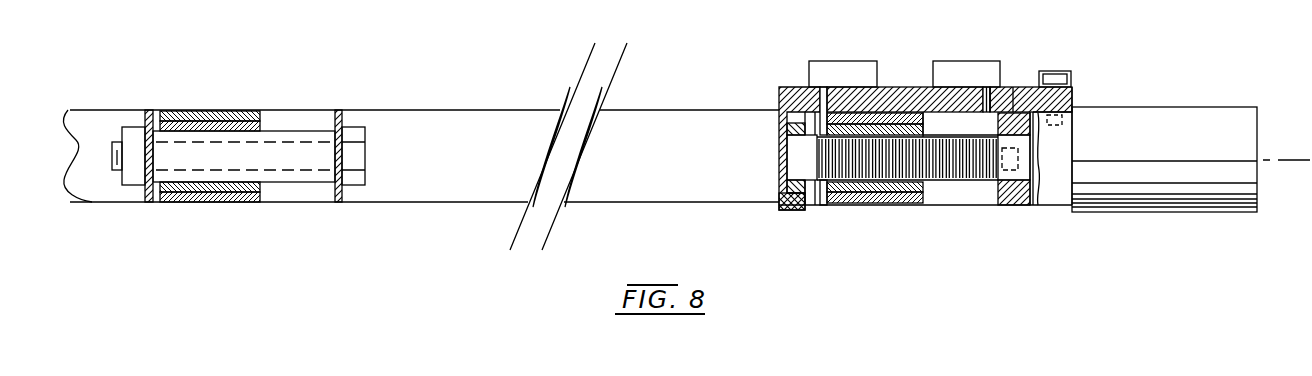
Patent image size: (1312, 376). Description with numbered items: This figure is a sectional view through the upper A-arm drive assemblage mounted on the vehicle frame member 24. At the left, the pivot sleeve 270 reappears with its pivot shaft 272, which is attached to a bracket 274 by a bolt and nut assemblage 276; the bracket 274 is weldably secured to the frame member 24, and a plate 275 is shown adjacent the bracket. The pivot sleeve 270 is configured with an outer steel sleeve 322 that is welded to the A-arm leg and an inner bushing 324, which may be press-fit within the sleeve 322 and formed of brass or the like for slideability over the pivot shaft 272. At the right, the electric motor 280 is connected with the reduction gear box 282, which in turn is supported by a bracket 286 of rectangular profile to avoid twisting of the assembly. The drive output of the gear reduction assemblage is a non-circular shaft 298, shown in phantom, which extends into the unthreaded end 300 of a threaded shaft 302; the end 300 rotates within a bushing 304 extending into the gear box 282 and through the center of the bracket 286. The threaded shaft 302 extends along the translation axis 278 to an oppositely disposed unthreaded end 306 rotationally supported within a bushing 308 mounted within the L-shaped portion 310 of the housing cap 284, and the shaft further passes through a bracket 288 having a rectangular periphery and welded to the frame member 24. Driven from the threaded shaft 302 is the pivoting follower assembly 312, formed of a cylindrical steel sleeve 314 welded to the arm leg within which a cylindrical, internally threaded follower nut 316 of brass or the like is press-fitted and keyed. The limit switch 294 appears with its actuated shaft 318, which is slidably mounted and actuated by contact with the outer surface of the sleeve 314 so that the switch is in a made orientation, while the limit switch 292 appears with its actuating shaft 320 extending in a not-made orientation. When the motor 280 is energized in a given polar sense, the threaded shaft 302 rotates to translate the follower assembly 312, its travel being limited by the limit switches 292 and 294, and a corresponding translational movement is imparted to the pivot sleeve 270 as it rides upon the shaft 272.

The frame member 24 is at (678, 128).
The pivot sleeve 270 is at (270, 164).
The pivot shaft 272 is at (293, 175).
The bracket 274 is at (338, 110).
The end plate 275 is at (152, 108).
The bolt and nut assemblage 276 is at (360, 153).
The translation axis 278 is at (1293, 160).
The electric motor 280 is at (1173, 117).
The gear box 282 is at (1050, 192).
The housing cap 284 is at (888, 97).
The bracket 286 is at (1000, 197).
The bracket 288 is at (1060, 77).
The limit switch 292 is at (977, 72).
The limit switch 294 is at (848, 70).
The non-circular shaft 298 is at (1015, 193).
The unthreaded end 300 is at (993, 193).
The threaded shaft 302 is at (932, 183).
The bushing 304 is at (1013, 88).
The unthreaded end 306 is at (790, 157).
The bushing 308 is at (790, 110).
The L-shaped portion 310 is at (790, 210).
The pivoting follower assembly 312 is at (905, 210).
The sleeve 314 is at (908, 90).
The follower nut 316 is at (848, 190).
The actuated shaft 318 is at (803, 88).
The actuating shaft 320 is at (1002, 88).
The outer steel sleeve 322 is at (223, 123).
The inner bushing 324 is at (177, 112).